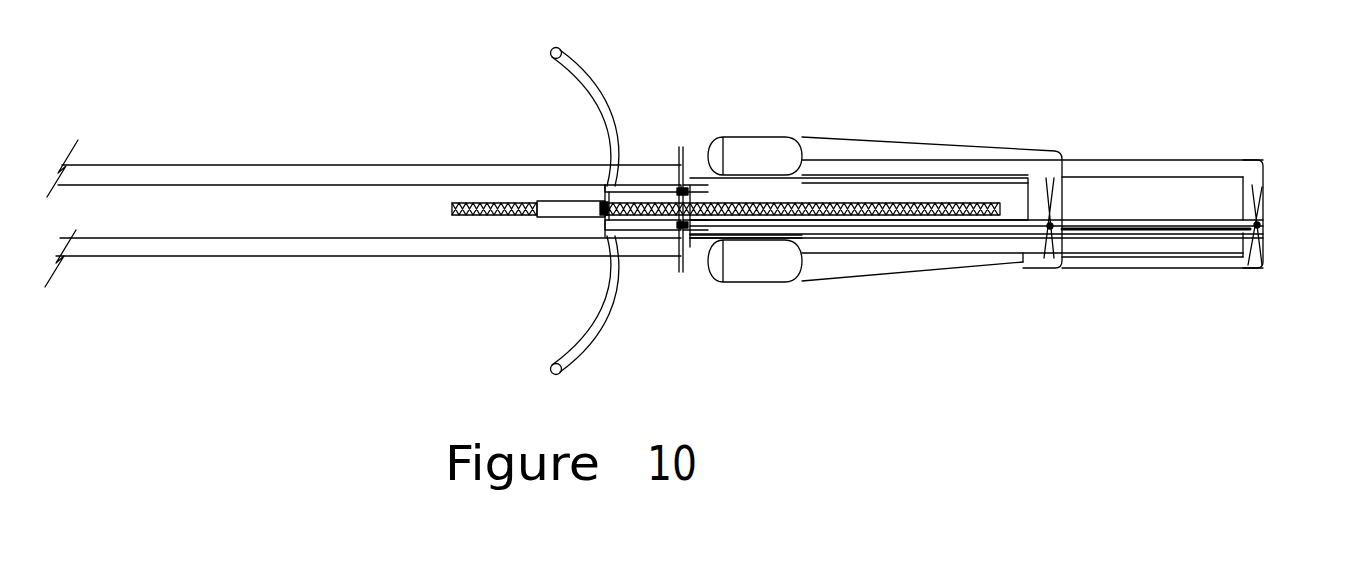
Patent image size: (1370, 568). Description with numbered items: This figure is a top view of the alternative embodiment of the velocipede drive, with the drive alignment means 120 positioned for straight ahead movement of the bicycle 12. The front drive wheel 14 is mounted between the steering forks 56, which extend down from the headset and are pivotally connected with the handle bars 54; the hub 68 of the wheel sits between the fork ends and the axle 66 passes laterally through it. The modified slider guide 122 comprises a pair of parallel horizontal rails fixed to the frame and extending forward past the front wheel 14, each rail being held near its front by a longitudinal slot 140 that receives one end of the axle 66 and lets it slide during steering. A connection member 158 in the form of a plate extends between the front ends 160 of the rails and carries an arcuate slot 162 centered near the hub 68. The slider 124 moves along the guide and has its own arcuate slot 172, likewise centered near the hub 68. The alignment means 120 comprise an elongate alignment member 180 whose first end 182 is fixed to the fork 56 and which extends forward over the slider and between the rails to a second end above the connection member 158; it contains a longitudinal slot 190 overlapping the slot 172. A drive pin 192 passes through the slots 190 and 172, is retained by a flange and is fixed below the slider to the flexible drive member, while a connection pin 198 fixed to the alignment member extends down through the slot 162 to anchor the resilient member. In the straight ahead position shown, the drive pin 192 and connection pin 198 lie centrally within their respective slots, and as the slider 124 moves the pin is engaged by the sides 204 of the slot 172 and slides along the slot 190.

The bicycle 12 is at (560, 207).
The front drive wheel 14 is at (452, 217).
The handle bars 54 is at (605, 90).
The steering forks 56 is at (625, 240).
The axle 66 is at (688, 247).
The hub 68 is at (686, 168).
The drive alignment means 120 is at (892, 225).
The slider guide 122 is at (562, 247).
The slider 124 is at (817, 270).
The slot 140 is at (648, 165).
The connection member 158 is at (1258, 170).
The front ends of the rails 160 is at (1188, 170).
The slot 162 is at (1262, 200).
The slot 172 is at (1023, 262).
The alignment member 180 is at (1152, 228).
The first end 182 is at (690, 248).
The slot 190 is at (1122, 225).
The drive pin 192 is at (1050, 228).
The connection pin 198 is at (1260, 225).
The sides of the slot 204 is at (1048, 180).